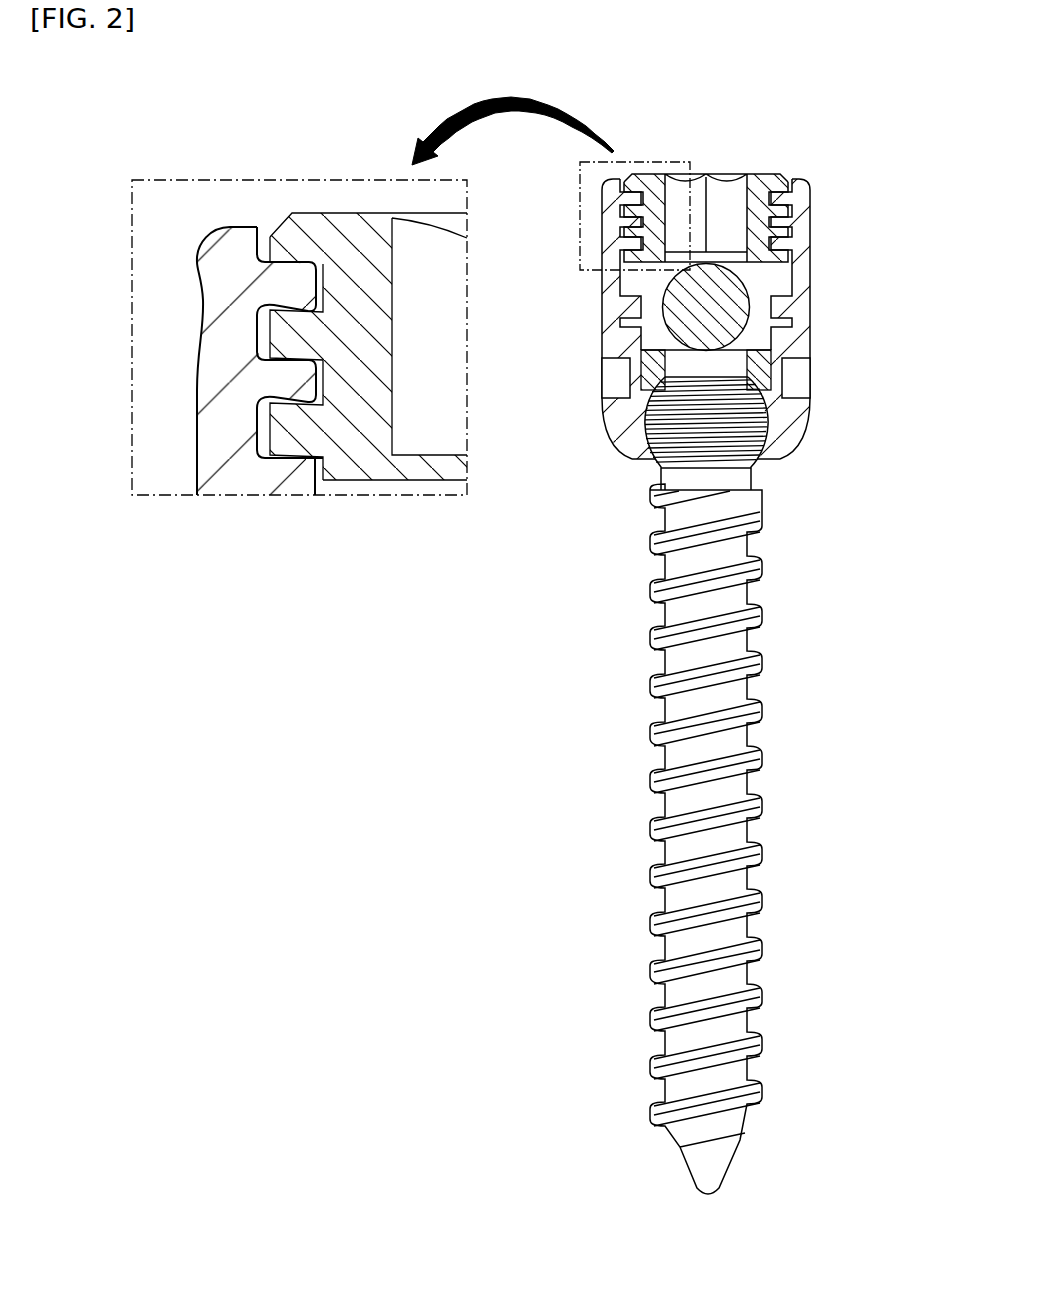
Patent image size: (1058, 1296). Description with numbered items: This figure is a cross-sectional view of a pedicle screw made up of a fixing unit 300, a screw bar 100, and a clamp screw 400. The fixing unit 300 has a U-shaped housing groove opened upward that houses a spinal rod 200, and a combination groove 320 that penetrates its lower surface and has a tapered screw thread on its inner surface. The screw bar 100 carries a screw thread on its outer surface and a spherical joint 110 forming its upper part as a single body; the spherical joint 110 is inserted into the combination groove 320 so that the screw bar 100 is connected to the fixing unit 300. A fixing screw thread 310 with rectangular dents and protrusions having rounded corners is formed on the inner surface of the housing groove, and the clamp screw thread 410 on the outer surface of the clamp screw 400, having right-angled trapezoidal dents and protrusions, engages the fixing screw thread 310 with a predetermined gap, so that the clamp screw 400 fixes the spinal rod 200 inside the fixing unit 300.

The screw bar 100 is at (657, 588).
The spherical joint 110 is at (752, 454).
The spinal rod 200 is at (668, 297).
The fixing unit 300 is at (217, 252).
The fixing screw thread 310 is at (257, 332).
The combination groove 320 is at (645, 432).
The clamp screw 400 is at (337, 225).
The clamp screw thread 410 is at (272, 333).